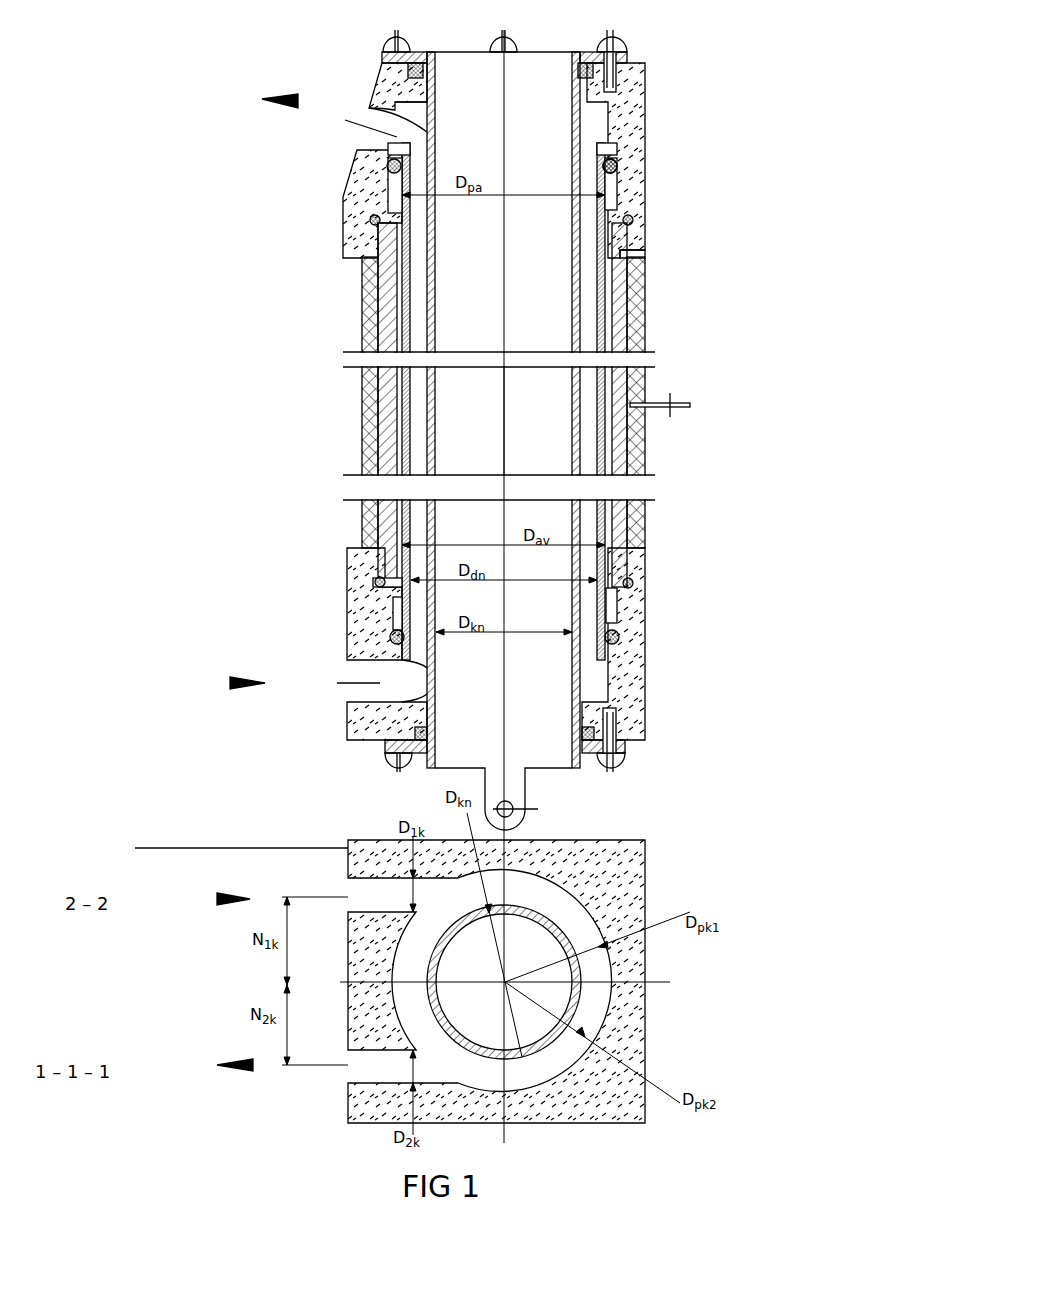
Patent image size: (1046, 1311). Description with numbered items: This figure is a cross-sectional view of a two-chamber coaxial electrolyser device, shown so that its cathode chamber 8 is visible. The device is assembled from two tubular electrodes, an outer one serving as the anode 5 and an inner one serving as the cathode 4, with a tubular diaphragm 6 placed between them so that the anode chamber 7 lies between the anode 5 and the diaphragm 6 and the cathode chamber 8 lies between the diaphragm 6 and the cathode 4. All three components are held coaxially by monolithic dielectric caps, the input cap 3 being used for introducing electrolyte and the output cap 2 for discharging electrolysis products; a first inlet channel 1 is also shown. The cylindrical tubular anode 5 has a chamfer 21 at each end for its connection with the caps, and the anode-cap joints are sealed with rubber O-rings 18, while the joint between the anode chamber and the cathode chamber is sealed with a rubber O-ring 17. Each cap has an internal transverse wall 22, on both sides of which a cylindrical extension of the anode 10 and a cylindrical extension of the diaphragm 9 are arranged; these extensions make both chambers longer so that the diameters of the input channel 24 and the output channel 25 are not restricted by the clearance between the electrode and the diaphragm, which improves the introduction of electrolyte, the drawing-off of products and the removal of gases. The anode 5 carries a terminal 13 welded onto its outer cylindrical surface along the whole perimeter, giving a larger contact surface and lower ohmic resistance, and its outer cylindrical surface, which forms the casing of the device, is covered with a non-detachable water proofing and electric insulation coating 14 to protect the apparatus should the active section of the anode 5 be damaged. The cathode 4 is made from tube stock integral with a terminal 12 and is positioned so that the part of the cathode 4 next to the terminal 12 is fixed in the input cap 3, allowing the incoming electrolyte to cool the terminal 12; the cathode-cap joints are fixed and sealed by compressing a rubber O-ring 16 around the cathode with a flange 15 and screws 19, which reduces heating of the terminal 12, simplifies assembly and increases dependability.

The first inlet channel 1 is at (328, 111).
The output cap 2 is at (417, 67).
The input cap 3 is at (347, 566).
The cathode 4 is at (582, 112).
The anode 5 is at (627, 303).
The tubular diaphragm 6 is at (390, 150).
The anode chamber 7 is at (605, 248).
The cathode chamber 8 is at (582, 205).
The cylindrical extension of diaphragm 9 is at (587, 967).
The cylindrical extension of anode 10 is at (402, 187).
The terminal 12 is at (518, 803).
The terminal 13 is at (727, 405).
The water proofing and electric insulation coating 14 is at (640, 337).
The flange 15 is at (383, 55).
The rubber O-ring 16 is at (620, 77).
The rubber O-ring 17 is at (386, 167).
The rubber O-ring 18 is at (372, 224).
The screws 19 is at (623, 45).
The chamfer 21 is at (628, 222).
The internal transverse wall 22 is at (612, 177).
The input channel 24 is at (348, 882).
The output channel 25 is at (395, 142).